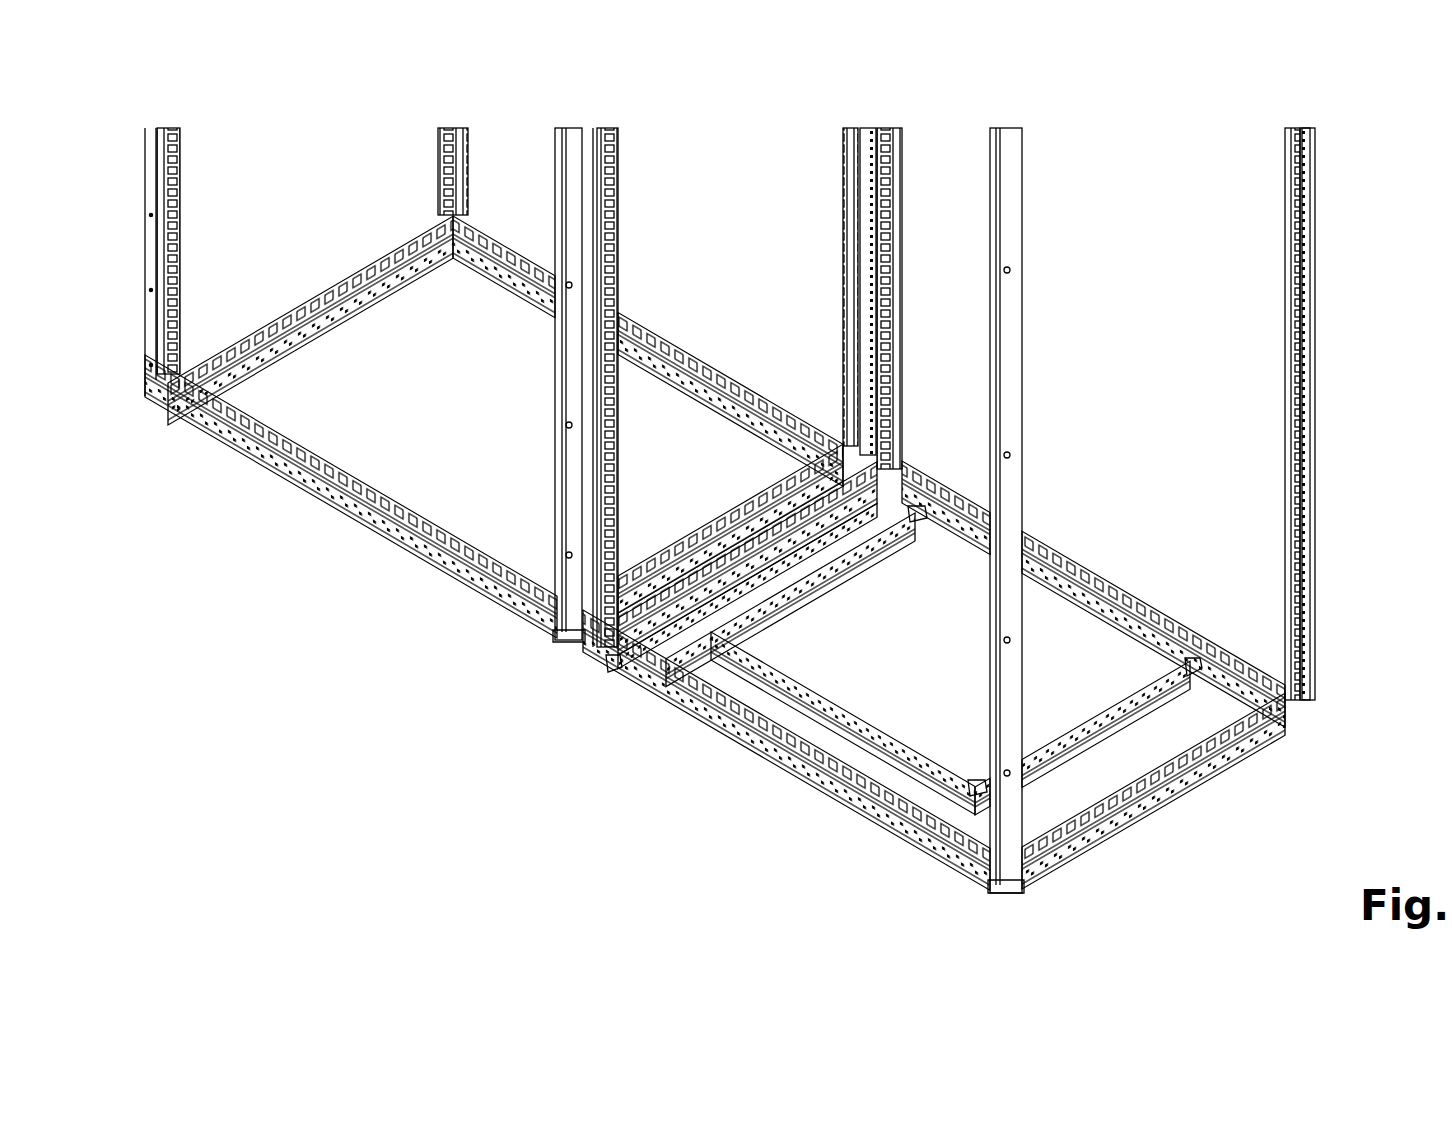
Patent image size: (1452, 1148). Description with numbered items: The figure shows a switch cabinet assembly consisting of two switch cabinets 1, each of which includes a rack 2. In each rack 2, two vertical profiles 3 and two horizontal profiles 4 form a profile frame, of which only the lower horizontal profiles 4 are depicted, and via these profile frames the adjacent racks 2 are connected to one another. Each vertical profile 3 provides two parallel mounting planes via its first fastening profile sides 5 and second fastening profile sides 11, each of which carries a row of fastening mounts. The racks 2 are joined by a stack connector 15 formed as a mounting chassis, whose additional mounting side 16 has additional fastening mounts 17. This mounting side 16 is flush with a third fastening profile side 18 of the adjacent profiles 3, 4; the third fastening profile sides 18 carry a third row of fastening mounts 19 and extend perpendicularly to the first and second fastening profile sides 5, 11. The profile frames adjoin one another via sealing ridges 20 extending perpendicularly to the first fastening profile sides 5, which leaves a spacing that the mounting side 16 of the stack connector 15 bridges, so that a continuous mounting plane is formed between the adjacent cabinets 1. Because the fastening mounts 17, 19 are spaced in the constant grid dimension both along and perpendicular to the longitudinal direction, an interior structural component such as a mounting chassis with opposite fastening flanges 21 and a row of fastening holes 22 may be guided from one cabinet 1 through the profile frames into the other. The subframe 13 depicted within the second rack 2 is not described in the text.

The switch cabinet 1 is at (285, 572).
The rack 2 is at (290, 285).
The vertical profile 3 is at (462, 135).
The horizontal profile 4 is at (387, 242).
The first fastening profile side 5 is at (510, 600).
The second fastening profile side 11 is at (530, 262).
The base subframe 13 is at (690, 720).
The stack connector 15 is at (875, 310).
The additional mounting side 16 is at (750, 490).
The additional fastening mount 17 is at (680, 540).
The third fastening profile side 18 is at (720, 520).
The third row of fastening mounts 19 is at (690, 500).
The sealing ridge 20 is at (740, 735).
The fastening flange 21 is at (780, 580).
The fastening hole 22 is at (620, 668).